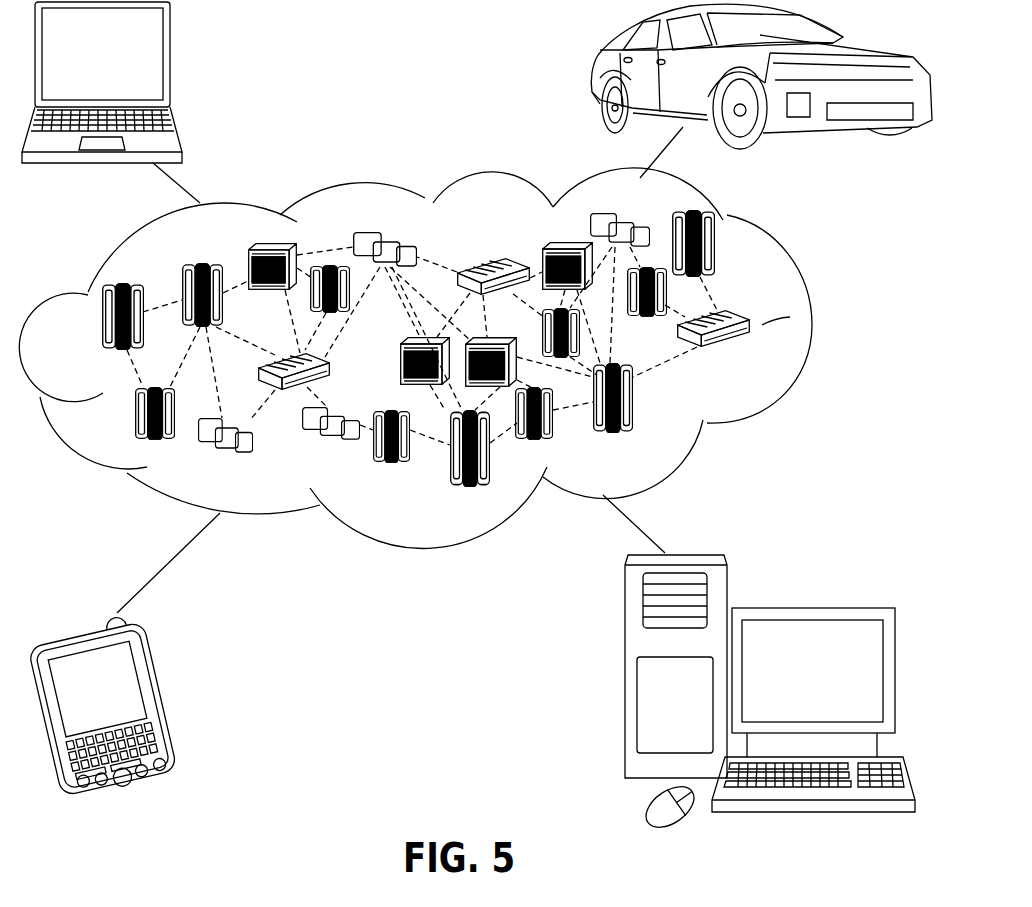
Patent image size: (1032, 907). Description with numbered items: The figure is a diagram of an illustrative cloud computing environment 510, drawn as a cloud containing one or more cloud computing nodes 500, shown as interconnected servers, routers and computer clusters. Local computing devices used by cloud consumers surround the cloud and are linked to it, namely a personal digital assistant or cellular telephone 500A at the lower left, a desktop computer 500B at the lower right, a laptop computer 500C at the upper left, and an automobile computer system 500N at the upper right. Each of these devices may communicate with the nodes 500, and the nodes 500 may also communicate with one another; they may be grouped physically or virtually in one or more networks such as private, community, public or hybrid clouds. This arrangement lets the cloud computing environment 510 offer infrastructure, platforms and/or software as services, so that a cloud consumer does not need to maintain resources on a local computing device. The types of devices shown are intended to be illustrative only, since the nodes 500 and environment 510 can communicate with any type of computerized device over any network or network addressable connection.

The cloud computing nodes 500 is at (752, 355).
The cloud computing environment 510 is at (813, 328).
The personal digital assistant (PDA) or cellular telephone 500A is at (157, 702).
The desktop computer 500B is at (812, 608).
The laptop computer 500C is at (172, 62).
The automobile computer system 500N is at (597, 75).